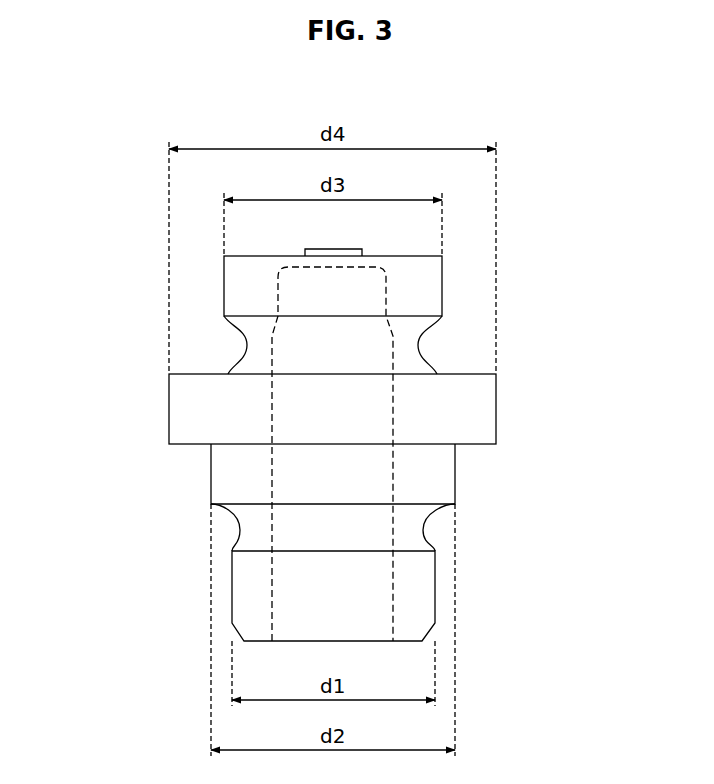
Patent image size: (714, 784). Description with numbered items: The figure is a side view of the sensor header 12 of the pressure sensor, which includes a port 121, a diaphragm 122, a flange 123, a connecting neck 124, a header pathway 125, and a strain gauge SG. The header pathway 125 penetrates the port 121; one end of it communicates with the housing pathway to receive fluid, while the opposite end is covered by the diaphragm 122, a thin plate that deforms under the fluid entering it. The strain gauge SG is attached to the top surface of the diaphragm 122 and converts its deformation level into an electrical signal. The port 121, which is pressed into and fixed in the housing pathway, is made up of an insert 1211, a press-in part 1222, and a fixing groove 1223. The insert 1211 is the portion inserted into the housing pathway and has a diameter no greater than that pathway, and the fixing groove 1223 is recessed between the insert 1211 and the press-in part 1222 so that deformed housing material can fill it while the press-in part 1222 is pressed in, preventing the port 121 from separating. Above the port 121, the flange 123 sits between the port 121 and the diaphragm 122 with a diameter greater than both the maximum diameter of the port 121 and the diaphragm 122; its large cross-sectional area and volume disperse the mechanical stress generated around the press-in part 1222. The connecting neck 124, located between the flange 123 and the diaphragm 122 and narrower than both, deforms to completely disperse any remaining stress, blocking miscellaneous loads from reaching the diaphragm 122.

The sensor header 12 is at (150, 232).
The strain gauge SG is at (362, 250).
The diaphragm 122 is at (435, 283).
The connecting neck 124 is at (420, 350).
The flange 123 is at (172, 415).
The header pathway 125 is at (333, 472).
The port 121 is at (586, 473).
The press-in part 1222 is at (449, 473).
The fixing groove 1223 is at (445, 524).
The insert 1211 is at (430, 585).